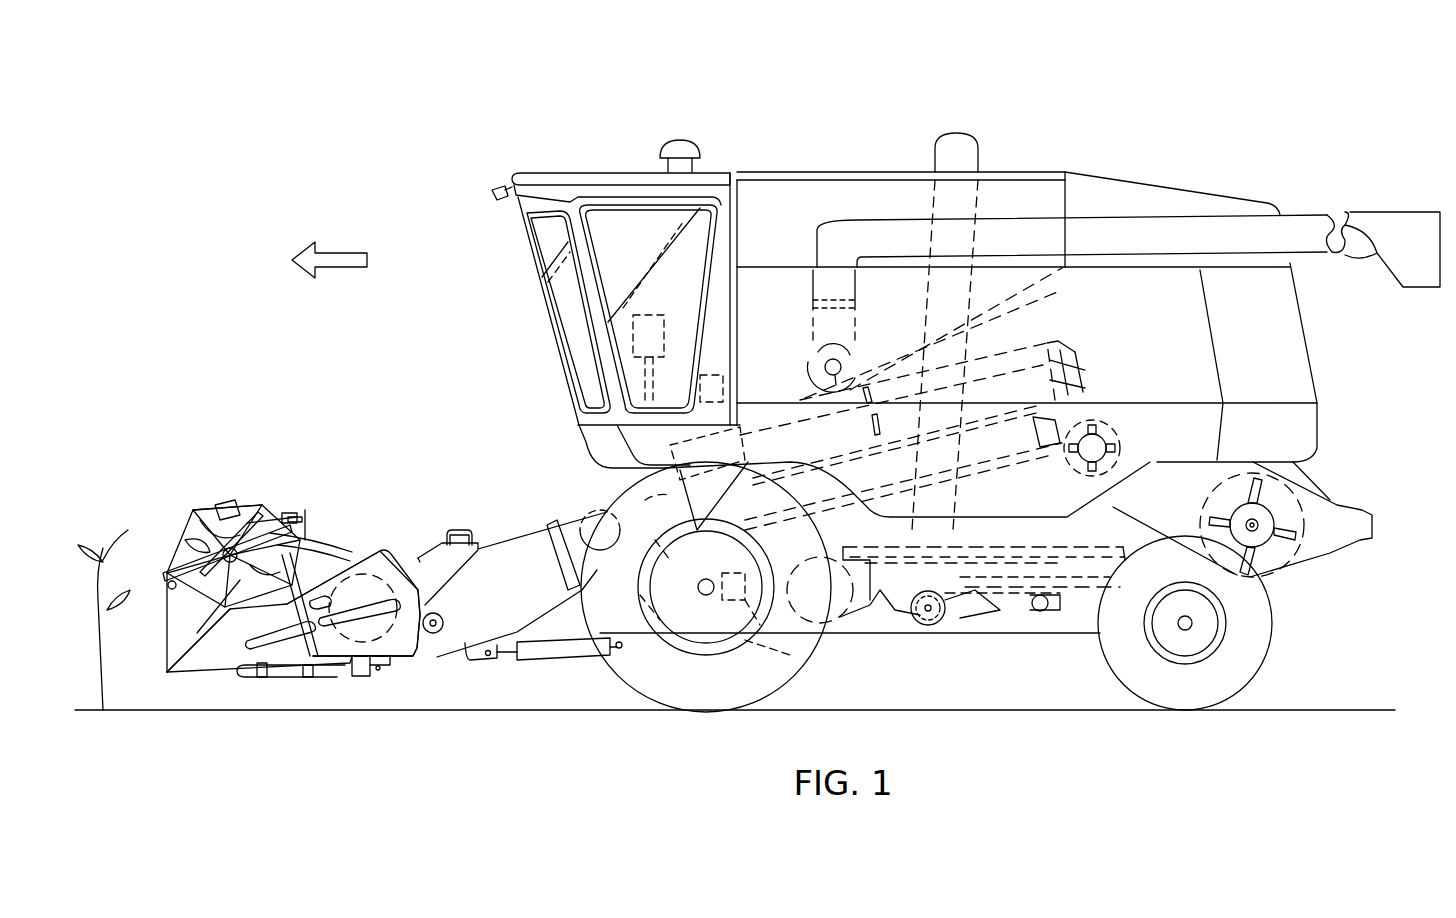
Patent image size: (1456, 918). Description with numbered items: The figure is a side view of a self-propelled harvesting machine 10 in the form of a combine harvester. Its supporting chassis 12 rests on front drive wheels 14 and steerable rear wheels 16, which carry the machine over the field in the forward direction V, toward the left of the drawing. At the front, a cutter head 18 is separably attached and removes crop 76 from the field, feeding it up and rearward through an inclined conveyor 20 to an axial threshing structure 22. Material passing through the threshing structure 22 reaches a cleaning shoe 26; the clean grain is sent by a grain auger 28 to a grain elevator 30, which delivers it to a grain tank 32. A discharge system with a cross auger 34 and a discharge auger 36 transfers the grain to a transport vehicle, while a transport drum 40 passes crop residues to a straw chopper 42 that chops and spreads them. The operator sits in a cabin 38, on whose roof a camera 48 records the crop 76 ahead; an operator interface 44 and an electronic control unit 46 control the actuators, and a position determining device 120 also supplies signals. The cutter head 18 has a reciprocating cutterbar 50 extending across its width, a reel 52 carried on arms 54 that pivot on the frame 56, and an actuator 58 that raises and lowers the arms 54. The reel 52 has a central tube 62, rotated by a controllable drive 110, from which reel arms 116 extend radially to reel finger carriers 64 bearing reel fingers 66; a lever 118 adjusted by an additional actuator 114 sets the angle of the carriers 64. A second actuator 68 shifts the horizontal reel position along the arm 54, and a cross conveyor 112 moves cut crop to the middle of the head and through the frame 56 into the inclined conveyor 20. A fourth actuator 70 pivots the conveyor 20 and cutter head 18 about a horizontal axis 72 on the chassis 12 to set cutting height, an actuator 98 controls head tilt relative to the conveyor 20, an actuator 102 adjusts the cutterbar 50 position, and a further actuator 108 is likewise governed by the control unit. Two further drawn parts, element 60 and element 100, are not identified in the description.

The harvesting machine 10 is at (410, 118).
The chassis 12 is at (988, 634).
The front drive wheels 14 is at (708, 680).
The steerable rear wheels 16 is at (1180, 685).
The cutter head 18 is at (350, 718).
The inclined conveyor 20 is at (495, 570).
The axial threshing structure 22 is at (990, 347).
The cleaning shoe 26 is at (1008, 545).
The grain auger 28 is at (925, 625).
The grain elevator 30 is at (925, 283).
The grain tank 32 is at (832, 171).
The cross auger 34 is at (818, 348).
The discharge auger 36 is at (1150, 212).
The cabin 38 is at (610, 171).
The transport drum 40 is at (1115, 426).
The straw chopper 42 is at (1298, 473).
The operator interface 44 is at (633, 340).
The electronic control unit 46 is at (700, 378).
The camera 48 is at (495, 200).
The cutterbar 50 is at (258, 682).
The reel 52 is at (265, 510).
The arms 54 is at (340, 532).
The frame 56 is at (378, 680).
The actuator 58 is at (320, 522).
The reel arm 60 is at (217, 513).
The central tube 62 is at (240, 503).
The reel finger carriers 64 is at (165, 580).
The reel fingers 66 is at (170, 608).
The second actuator 68 is at (298, 510).
The fourth actuator 70 is at (540, 662).
The horizontal axis 72 is at (598, 512).
The crop 76 is at (97, 560).
The actuator 98 is at (452, 530).
The header pivot 100 is at (433, 636).
The actuator 102 is at (305, 685).
The actuator 108 is at (760, 628).
The controllable drive 110 is at (192, 513).
The cross conveyor 112 is at (373, 582).
The additional actuator 114 is at (290, 513).
The reel arms 116 is at (190, 512).
The lever 118 is at (223, 510).
The position determining device 120 is at (690, 150).